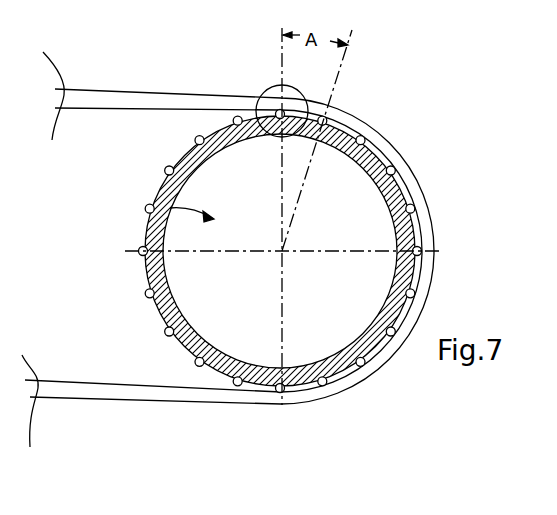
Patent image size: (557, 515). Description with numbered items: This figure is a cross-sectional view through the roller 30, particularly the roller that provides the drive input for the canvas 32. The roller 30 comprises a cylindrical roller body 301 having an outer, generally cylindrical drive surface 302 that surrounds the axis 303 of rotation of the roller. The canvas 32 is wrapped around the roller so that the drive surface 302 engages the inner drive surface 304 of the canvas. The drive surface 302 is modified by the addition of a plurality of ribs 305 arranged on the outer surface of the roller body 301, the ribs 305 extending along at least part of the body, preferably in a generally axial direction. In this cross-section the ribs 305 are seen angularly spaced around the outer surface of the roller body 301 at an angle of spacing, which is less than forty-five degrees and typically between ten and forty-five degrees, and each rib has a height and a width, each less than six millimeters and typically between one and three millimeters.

The roller 30 is at (148, 204).
The canvas 32 is at (128, 398).
The cylindrical roller body 301 is at (424, 264).
The drive surface 302 is at (414, 214).
The axis of rotation 303 is at (282, 254).
The inner drive surface 304 is at (105, 380).
The ribs 305 is at (365, 138).